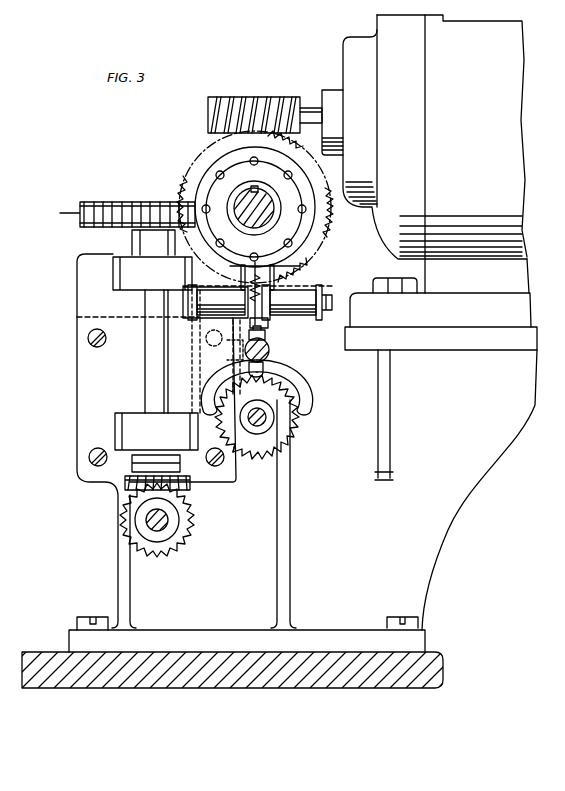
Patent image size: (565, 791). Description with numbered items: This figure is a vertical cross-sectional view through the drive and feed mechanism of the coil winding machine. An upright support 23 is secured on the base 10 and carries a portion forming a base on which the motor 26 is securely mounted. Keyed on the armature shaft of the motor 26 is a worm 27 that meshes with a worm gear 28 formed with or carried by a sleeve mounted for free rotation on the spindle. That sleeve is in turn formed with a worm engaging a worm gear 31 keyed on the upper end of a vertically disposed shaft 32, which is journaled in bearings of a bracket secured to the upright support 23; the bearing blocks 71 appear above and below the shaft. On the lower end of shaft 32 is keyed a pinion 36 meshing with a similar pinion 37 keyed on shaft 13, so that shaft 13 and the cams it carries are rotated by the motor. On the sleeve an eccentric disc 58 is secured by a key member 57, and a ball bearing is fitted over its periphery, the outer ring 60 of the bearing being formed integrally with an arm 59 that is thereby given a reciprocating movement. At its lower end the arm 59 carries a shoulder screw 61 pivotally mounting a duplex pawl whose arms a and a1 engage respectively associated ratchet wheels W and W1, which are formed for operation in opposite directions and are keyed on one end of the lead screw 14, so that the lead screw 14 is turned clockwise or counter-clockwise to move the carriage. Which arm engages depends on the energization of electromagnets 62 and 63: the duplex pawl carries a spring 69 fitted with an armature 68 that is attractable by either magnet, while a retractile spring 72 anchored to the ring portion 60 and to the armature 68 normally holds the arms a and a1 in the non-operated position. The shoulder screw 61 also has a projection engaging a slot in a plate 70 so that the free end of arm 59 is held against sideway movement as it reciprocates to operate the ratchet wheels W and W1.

The base 10 is at (398, 681).
The shaft 13 is at (167, 523).
The lead screw 14 is at (270, 420).
The upright support 23 is at (78, 277).
The motor 26 is at (510, 208).
The worm 27 is at (272, 97).
The worm gear 28 is at (183, 196).
The worm gear 31 is at (80, 212).
The shaft 32 is at (146, 368).
The pinion 36 is at (133, 463).
The pinion 37 is at (160, 553).
The key member 57 is at (254, 195).
The eccentric disc 58 is at (238, 200).
The arm 59 is at (300, 272).
The outer ring 60 is at (198, 188).
The shoulder screw 61 is at (269, 353).
The electromagnet 62 is at (207, 318).
The electromagnet 63 is at (303, 316).
The armature 68 is at (270, 323).
The spring 69 is at (222, 340).
The plate 70 is at (236, 478).
The bearing block 71 is at (190, 268).
The retractile spring 72 is at (233, 293).
The ratchet wheel W is at (268, 417).
The ratchet wheel W1 is at (247, 460).
The pawl arm a is at (310, 392).
The pawl arm a1 is at (205, 396).